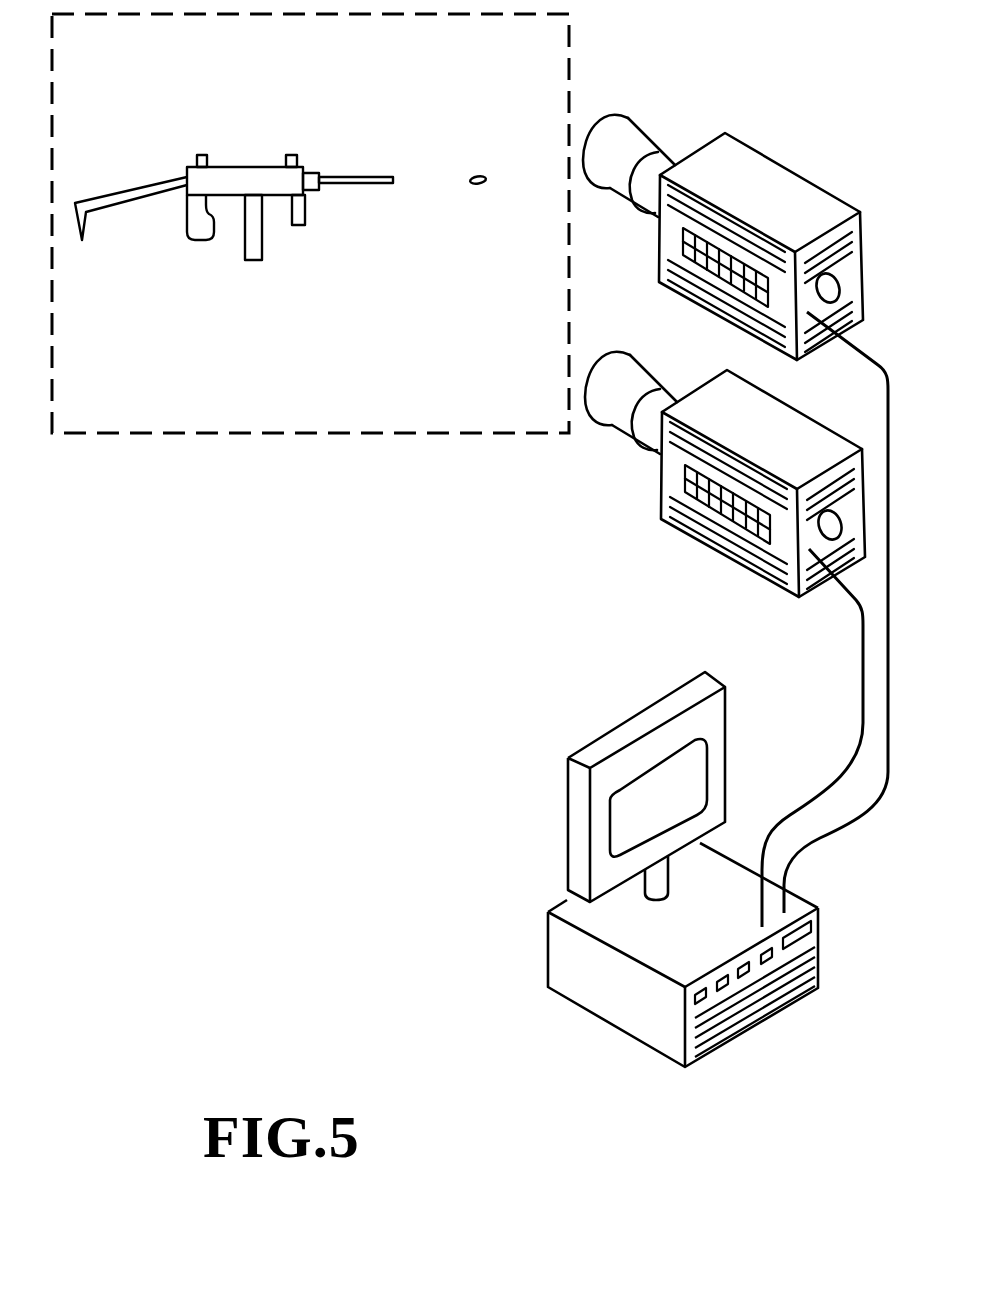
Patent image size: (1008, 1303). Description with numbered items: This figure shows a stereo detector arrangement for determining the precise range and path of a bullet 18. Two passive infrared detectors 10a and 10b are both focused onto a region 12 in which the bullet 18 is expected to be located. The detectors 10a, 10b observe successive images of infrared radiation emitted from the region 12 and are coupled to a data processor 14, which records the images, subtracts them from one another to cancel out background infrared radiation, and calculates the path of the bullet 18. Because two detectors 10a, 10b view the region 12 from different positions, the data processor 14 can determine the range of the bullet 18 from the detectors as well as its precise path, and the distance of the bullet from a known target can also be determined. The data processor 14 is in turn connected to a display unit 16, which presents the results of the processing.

The region 12 is at (162, 73).
The bullet 18 is at (479, 177).
The passive infrared detector 10a is at (780, 433).
The passive infrared detector 10b is at (780, 190).
The display unit 16 is at (680, 762).
The data processor 14 is at (605, 988).